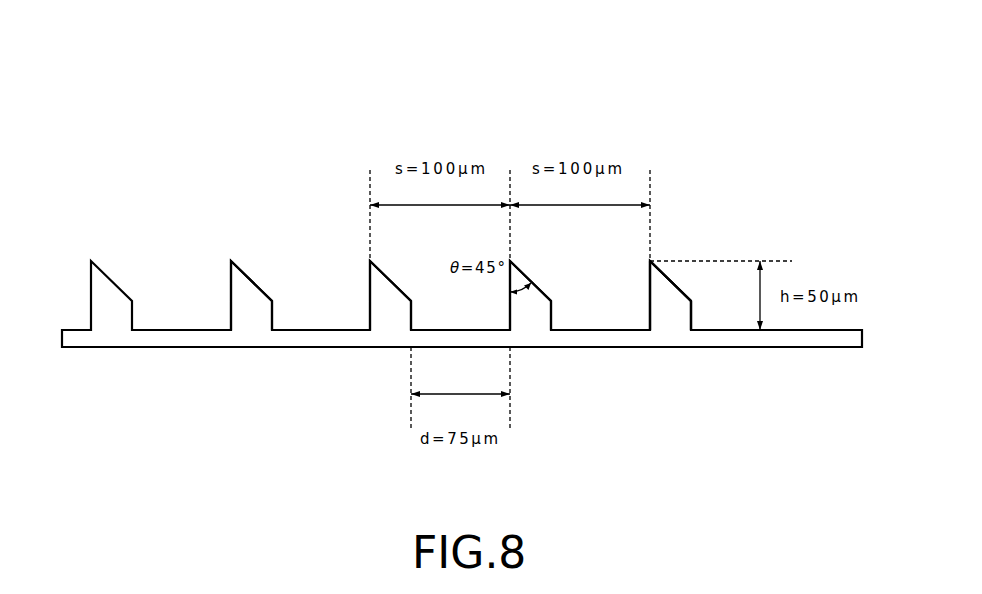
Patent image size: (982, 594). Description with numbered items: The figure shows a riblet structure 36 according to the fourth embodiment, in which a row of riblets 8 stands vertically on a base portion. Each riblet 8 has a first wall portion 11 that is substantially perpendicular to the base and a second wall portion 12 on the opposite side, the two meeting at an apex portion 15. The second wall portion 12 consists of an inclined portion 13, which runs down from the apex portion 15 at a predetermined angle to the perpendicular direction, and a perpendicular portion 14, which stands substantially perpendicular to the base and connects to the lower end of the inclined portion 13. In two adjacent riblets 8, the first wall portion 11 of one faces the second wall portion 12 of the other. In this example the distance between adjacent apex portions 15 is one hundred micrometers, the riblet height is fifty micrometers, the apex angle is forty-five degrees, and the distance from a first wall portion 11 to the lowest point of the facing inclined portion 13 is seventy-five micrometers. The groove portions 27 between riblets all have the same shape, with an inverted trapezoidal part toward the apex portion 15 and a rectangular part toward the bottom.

The riblet structure 36 is at (482, 91).
The groove portion 27 is at (180, 293).
The apex portion 15 is at (231, 261).
The riblet 8 is at (398, 281).
The first wall portion 11 is at (650, 305).
The second wall portion 12 is at (750, 211).
The inclined portion 13 is at (672, 281).
The perpendicular portion 14 is at (694, 317).